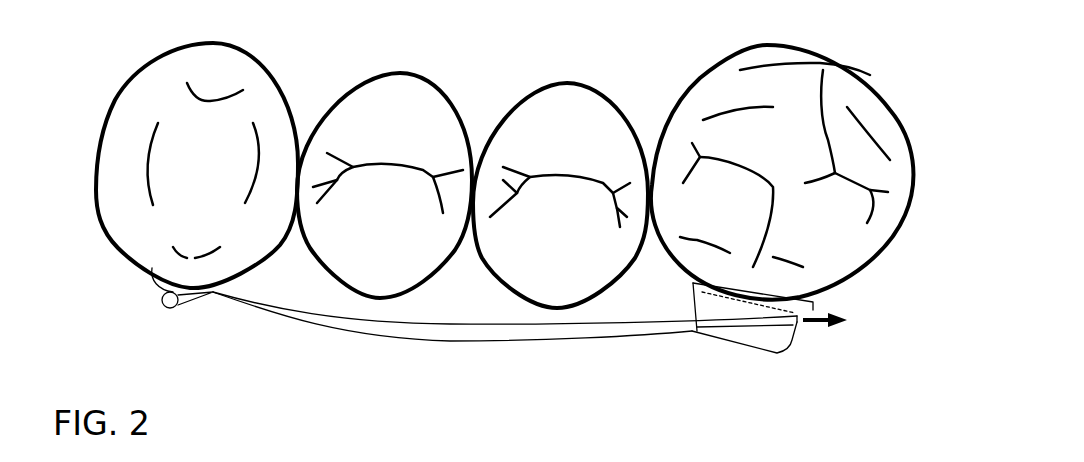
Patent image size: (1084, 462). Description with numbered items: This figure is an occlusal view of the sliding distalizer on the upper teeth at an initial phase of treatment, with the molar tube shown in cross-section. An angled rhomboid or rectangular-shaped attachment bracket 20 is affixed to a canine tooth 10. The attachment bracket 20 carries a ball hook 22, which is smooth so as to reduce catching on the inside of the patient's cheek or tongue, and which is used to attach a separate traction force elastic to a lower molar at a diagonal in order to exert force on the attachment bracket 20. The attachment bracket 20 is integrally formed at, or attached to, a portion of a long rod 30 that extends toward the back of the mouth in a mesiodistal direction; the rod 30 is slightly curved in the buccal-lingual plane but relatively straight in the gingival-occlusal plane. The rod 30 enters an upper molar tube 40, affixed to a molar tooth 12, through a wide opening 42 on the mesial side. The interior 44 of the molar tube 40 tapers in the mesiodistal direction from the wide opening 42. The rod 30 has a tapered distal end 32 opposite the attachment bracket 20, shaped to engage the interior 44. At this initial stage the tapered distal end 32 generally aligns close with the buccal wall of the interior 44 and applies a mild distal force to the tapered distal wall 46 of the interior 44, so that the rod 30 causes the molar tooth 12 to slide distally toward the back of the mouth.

The canine tooth 10 is at (118, 163).
The molar tooth 12 is at (852, 250).
The attachment bracket 20 is at (208, 292).
The ball hook 22 is at (165, 306).
The rod 30 is at (392, 330).
The tapered distal end 32 is at (720, 323).
The upper molar tube 40 is at (759, 356).
The opening 42 is at (707, 305).
The interior 44 is at (768, 325).
The distal wall 46 is at (798, 323).